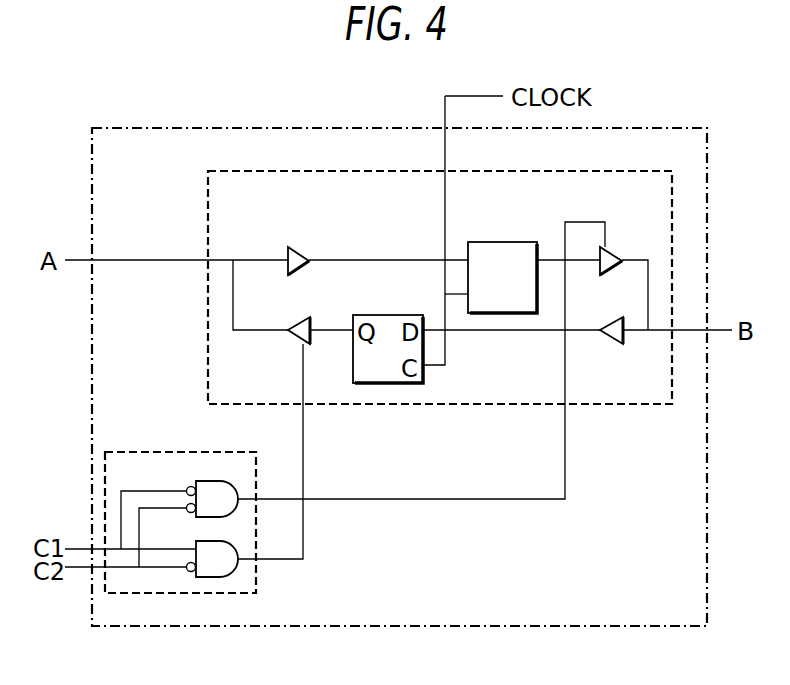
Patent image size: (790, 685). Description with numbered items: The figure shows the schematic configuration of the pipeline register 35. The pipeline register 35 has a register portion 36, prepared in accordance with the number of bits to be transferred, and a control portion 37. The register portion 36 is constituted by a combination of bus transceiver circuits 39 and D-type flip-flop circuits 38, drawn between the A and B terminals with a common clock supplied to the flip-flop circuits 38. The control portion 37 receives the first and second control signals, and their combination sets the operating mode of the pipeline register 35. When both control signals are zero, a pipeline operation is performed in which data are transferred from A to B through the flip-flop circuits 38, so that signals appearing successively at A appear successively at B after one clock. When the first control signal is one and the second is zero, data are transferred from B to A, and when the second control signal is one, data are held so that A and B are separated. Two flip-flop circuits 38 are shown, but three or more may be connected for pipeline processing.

The pipeline register 35 is at (674, 134).
The register portion 36 is at (440, 403).
The control portion 37 is at (180, 454).
The D-type flip-flop circuit 38 is at (501, 241).
The bus transceiver circuit 39 is at (299, 247).